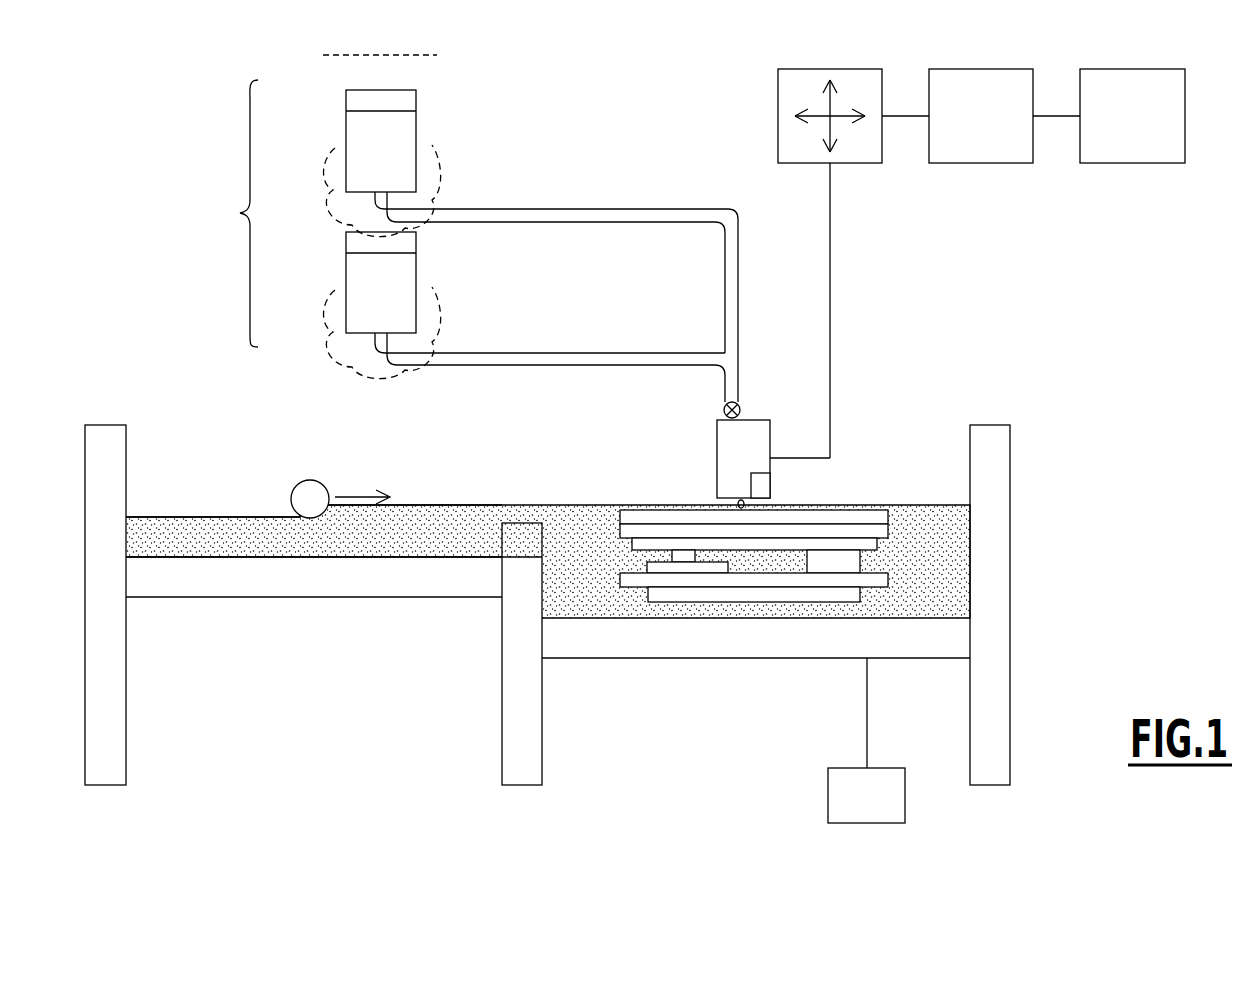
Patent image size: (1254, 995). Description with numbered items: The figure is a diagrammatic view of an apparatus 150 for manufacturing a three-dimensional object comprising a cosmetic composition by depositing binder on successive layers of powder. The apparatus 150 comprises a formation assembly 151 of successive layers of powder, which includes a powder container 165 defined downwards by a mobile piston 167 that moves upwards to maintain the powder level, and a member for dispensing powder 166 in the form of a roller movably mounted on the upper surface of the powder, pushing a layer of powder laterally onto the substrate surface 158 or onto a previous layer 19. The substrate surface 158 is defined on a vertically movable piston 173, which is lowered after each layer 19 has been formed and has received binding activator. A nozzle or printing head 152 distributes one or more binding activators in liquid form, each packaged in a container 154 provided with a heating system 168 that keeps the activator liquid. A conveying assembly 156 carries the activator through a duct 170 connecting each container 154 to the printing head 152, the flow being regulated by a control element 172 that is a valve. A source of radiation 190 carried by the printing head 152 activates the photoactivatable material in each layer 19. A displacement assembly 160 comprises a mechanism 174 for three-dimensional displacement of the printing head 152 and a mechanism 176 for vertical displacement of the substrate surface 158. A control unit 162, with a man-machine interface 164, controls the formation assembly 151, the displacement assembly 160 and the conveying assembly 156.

The layer 19 is at (780, 587).
The apparatus 150 is at (93, 125).
The formation assembly 151 is at (1060, 491).
The nozzle or printing head 152 is at (758, 430).
The container 154 is at (347, 128).
The conveying assembly 156 is at (580, 171).
The substrate surface 158 is at (925, 618).
The displacement assembly 160 is at (791, 64).
The control unit 162 is at (975, 145).
The man-machine interface 164 is at (1138, 145).
The powder container 165 is at (300, 520).
The member for dispensing powder 166 is at (313, 490).
The mobile piston 167 is at (395, 572).
The heating system 168 is at (434, 148).
The duct 170 is at (657, 209).
The control element 172 is at (723, 410).
The vertically movable piston 173 is at (913, 650).
The mechanism for three-dimensional displacement 174 is at (856, 150).
The mechanism for vertical displacement 176 is at (845, 793).
The source of radiation 190 is at (761, 487).